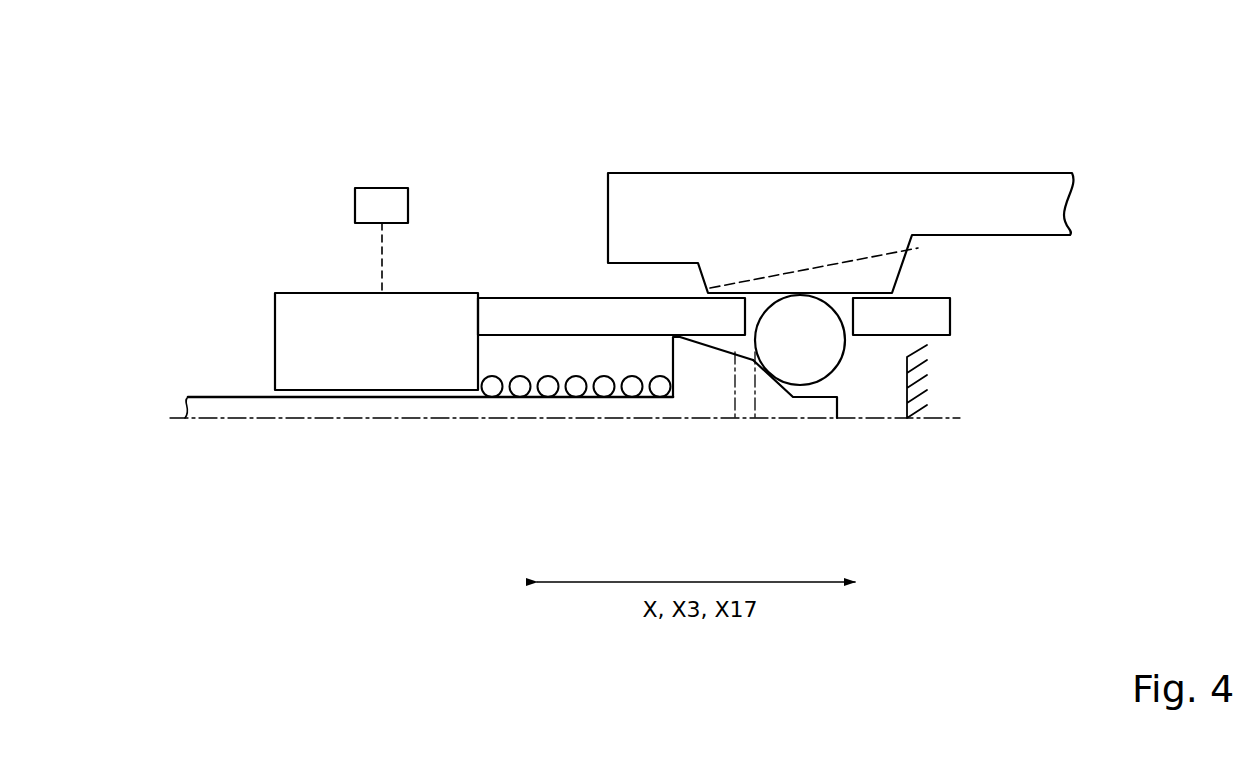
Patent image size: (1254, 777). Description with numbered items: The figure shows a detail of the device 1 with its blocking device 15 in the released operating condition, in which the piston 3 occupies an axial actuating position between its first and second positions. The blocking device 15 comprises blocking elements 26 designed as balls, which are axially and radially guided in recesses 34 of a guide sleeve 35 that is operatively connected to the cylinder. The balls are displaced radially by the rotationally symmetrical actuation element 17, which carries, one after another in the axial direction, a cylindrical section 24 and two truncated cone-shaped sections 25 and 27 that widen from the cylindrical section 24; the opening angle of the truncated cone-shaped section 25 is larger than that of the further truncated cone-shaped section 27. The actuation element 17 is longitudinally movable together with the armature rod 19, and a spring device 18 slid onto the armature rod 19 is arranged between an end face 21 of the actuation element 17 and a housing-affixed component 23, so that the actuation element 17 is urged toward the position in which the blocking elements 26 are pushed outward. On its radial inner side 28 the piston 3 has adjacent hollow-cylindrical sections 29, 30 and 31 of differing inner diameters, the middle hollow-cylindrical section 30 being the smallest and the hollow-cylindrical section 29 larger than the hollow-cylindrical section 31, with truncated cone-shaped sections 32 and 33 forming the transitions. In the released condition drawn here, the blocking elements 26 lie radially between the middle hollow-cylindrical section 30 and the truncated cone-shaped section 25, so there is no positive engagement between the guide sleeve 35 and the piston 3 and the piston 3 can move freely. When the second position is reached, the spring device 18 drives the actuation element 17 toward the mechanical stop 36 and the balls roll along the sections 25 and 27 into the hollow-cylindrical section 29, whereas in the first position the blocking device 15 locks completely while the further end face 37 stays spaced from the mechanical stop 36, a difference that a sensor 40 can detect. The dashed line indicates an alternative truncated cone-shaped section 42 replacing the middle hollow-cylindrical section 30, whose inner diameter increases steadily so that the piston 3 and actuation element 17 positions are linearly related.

The device 1 is at (989, 143).
The piston 3 is at (645, 198).
The blocking device 15 is at (717, 432).
The actuation element 17 is at (803, 437).
The spring device 18 is at (518, 383).
The armature rod 19 is at (483, 400).
The end face 21 is at (665, 350).
The housing-affixed component 23 is at (328, 330).
The cylindrical section 24 is at (817, 399).
The truncated cone-shaped section 25 is at (780, 392).
The blocking elements 26 is at (820, 352).
The further truncated cone-shaped section 27 is at (693, 342).
The radial inner side 28 is at (1022, 237).
The hollow-cylindrical section 29 is at (968, 260).
The middle hollow-cylindrical section 30 is at (843, 300).
The hollow-cylindrical section 31 is at (654, 288).
The truncated cone-shaped section 32 is at (895, 282).
The truncated cone-shaped section 33 is at (706, 277).
The recesses 34 is at (756, 313).
The guide sleeve 35 is at (548, 318).
The mechanical stop 36 is at (927, 373).
The further end face 37 is at (838, 408).
The sensor 40 is at (397, 202).
The truncated cone-shaped section 42 is at (824, 260).